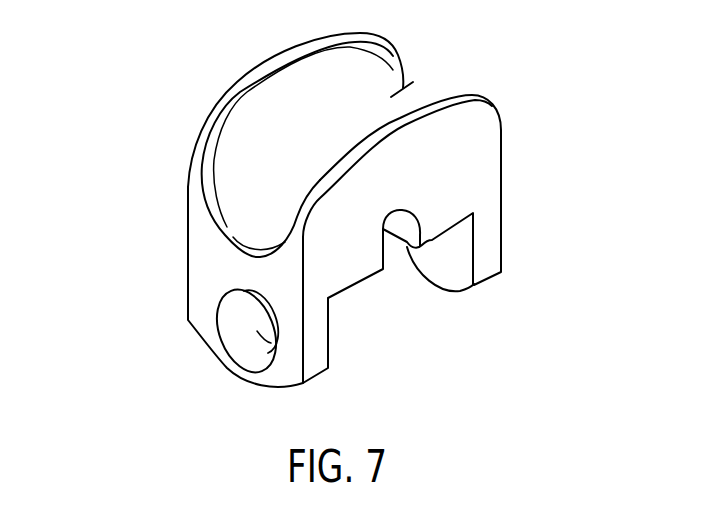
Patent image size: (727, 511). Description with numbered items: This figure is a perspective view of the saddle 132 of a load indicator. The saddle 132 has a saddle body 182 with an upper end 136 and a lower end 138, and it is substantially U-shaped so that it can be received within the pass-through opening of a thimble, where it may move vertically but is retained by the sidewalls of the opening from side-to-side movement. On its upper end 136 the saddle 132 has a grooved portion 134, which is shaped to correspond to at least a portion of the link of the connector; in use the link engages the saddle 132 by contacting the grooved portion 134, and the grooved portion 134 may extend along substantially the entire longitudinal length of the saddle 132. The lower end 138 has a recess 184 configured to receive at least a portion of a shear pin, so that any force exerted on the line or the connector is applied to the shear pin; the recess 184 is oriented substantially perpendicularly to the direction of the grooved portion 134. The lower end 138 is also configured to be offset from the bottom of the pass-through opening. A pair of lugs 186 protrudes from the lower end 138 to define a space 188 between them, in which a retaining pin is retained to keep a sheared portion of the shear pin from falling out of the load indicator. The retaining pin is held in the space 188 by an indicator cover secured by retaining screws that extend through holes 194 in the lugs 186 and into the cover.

The saddle 132 is at (541, 67).
The grooved portion 134 is at (410, 79).
The upper end 136 is at (197, 111).
The lower end 138 is at (470, 316).
The saddle body 182 is at (453, 162).
The recess 184 is at (401, 252).
The lugs 186 is at (203, 268).
The space 188 is at (353, 378).
The holes 194 is at (247, 343).